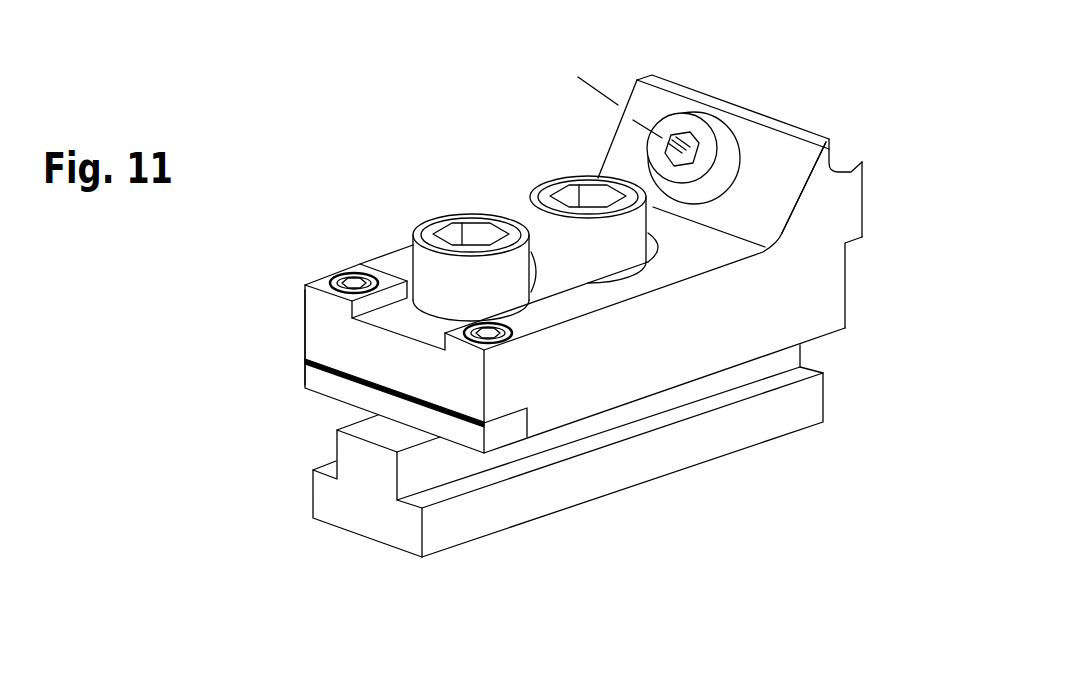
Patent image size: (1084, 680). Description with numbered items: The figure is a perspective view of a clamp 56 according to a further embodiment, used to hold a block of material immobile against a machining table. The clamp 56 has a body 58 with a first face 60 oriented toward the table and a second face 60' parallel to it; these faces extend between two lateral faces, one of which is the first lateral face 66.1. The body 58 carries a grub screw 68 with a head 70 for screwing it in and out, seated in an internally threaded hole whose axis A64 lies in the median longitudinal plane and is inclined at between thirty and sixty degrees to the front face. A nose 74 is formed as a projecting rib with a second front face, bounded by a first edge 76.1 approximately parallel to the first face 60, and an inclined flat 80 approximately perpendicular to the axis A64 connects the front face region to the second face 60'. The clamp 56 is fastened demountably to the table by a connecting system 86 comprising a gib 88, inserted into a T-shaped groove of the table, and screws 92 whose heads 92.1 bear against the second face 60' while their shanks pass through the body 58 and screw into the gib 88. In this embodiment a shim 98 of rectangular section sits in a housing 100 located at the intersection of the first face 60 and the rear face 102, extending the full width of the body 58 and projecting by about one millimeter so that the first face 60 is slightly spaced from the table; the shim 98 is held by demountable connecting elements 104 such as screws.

The clamp 56 is at (905, 177).
The body 58 is at (597, 363).
The first face 60 is at (612, 297).
The second face 60' is at (356, 247).
The axis of the internally threaded hole A64 is at (578, 77).
The first lateral face 66.1 is at (713, 315).
The grub screw 68 is at (677, 105).
The head 70 is at (720, 153).
The nose 74 is at (850, 148).
The first edge 76.1 is at (855, 243).
The inclined flat 80 is at (800, 220).
The connecting system 86 is at (282, 444).
The gib 88 is at (657, 448).
The screw 92 is at (522, 180).
The head 92.1 is at (437, 220).
The shim 98 is at (283, 372).
The housing 100 is at (510, 415).
The rear face 102 is at (320, 320).
The demountable connecting elements 104 is at (346, 276).